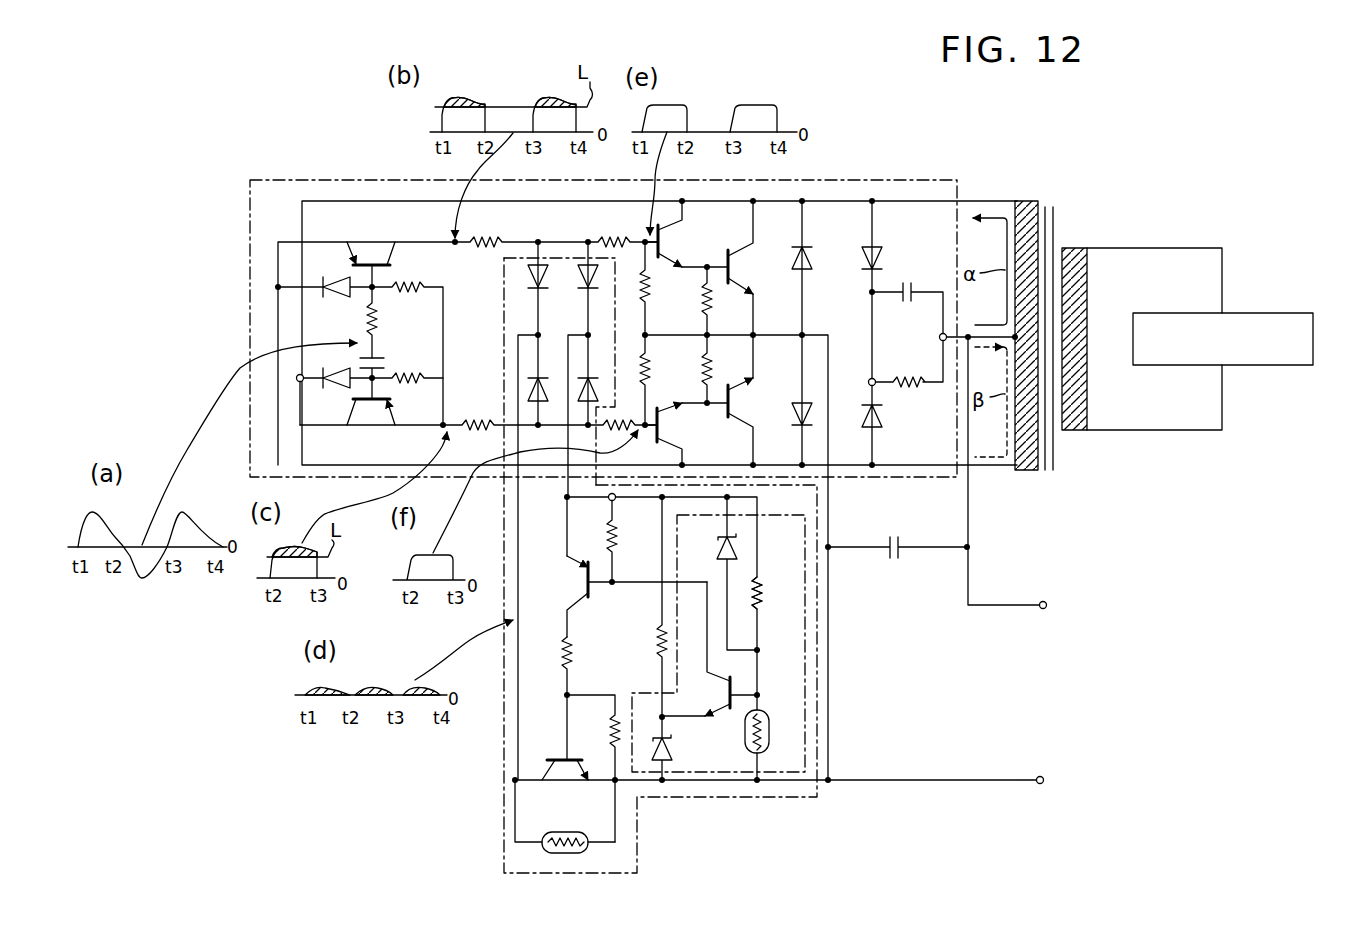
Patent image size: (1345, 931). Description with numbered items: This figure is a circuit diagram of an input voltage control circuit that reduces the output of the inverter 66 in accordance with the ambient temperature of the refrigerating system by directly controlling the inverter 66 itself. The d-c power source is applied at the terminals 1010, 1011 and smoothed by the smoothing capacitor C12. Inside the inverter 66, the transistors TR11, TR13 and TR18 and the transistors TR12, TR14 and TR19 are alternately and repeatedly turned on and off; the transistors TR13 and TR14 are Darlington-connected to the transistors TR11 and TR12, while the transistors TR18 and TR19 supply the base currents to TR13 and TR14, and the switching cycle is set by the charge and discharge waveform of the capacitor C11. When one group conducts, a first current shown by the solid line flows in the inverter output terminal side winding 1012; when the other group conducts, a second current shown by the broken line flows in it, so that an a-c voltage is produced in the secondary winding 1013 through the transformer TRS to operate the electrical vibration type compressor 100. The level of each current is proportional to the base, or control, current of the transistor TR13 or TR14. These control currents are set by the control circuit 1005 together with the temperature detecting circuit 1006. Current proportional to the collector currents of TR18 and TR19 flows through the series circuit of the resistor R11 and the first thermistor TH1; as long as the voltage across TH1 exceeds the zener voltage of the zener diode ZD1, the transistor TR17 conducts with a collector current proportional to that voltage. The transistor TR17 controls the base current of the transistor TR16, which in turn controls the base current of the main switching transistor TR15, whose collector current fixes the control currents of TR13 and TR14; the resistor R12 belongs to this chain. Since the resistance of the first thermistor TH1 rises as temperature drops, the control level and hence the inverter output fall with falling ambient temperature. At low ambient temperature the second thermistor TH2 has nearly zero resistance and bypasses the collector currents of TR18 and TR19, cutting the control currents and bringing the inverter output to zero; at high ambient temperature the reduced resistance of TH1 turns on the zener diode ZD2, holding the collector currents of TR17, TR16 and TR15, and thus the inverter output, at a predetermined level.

The inverter 66 is at (905, 180).
The electrical vibration type compressor 100 is at (1273, 313).
The control circuit 1005 is at (818, 632).
The temperature detecting circuit 1006 is at (806, 692).
The terminal of the d-c power source 1010 is at (1043, 601).
The terminal of the d-c power source 1011 is at (1040, 776).
The winding on the output terminal side of the inverter 1012 is at (1025, 201).
The secondary winding 1013 is at (1078, 248).
The transformer TRS is at (1049, 200).
The transistor TR11 is at (735, 275).
The transistor TR12 is at (737, 400).
The transistor TR13 is at (664, 240).
The transistor TR14 is at (665, 428).
The main switching element TR15 is at (567, 765).
The transistor TR16 is at (613, 567).
The transistor TR17 is at (727, 690).
The transistor TR18 is at (370, 260).
The transistor TR19 is at (372, 405).
The capacitor C11 is at (386, 362).
The smoothing capacitor C12 is at (893, 560).
The resistor R11 is at (760, 585).
The resistor R12 is at (660, 638).
The zener diode ZD1 is at (672, 750).
The zener diode ZD2 is at (724, 550).
The first thermistor TH1 is at (762, 712).
The second thermistor TH2 is at (542, 843).